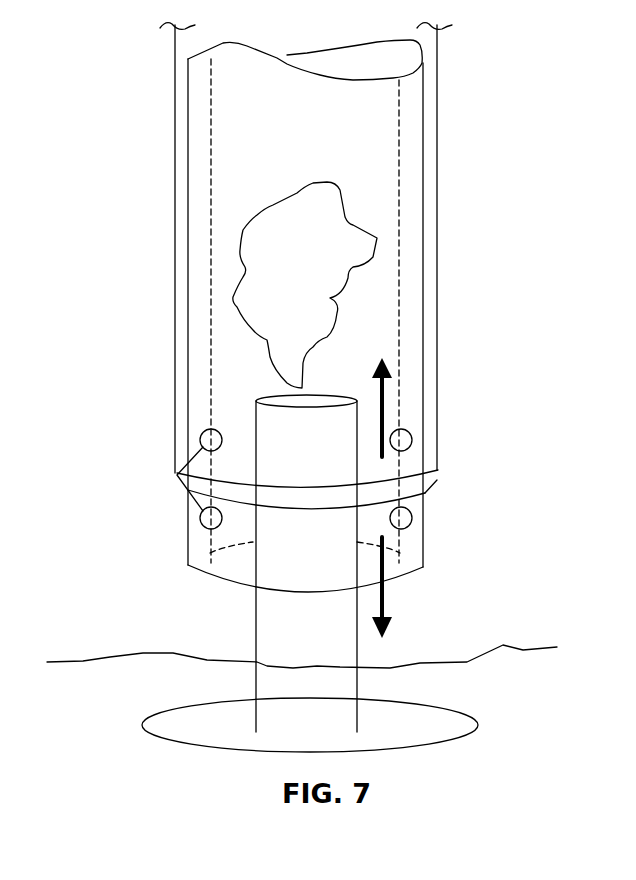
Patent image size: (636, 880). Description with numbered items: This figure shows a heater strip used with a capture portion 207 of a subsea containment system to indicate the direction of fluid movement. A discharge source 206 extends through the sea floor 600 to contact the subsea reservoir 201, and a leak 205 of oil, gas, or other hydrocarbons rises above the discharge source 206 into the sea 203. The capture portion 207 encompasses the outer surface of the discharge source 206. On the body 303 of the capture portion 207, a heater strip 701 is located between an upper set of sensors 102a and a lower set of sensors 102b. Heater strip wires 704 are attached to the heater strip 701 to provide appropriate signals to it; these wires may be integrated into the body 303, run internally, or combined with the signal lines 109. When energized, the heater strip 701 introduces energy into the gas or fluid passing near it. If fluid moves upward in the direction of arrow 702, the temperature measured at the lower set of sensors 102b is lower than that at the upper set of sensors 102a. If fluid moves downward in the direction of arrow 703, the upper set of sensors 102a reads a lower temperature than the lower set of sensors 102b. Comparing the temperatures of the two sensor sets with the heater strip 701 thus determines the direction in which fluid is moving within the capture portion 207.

The upper set of sensors 102a is at (412, 440).
The lower set of sensors 102b is at (412, 518).
The signal lines 109 is at (176, 122).
The subsea reservoir 201 is at (478, 723).
The sea 203 is at (92, 427).
The leak 205 is at (299, 220).
The discharge source 206 is at (253, 621).
The capture portion 207 is at (530, 158).
The body 303 is at (413, 238).
The sea floor 600 is at (108, 665).
The heater strip 701 is at (230, 490).
The arrow 702 is at (383, 388).
The arrow 703 is at (383, 613).
The heater strip wires 704 is at (438, 67).